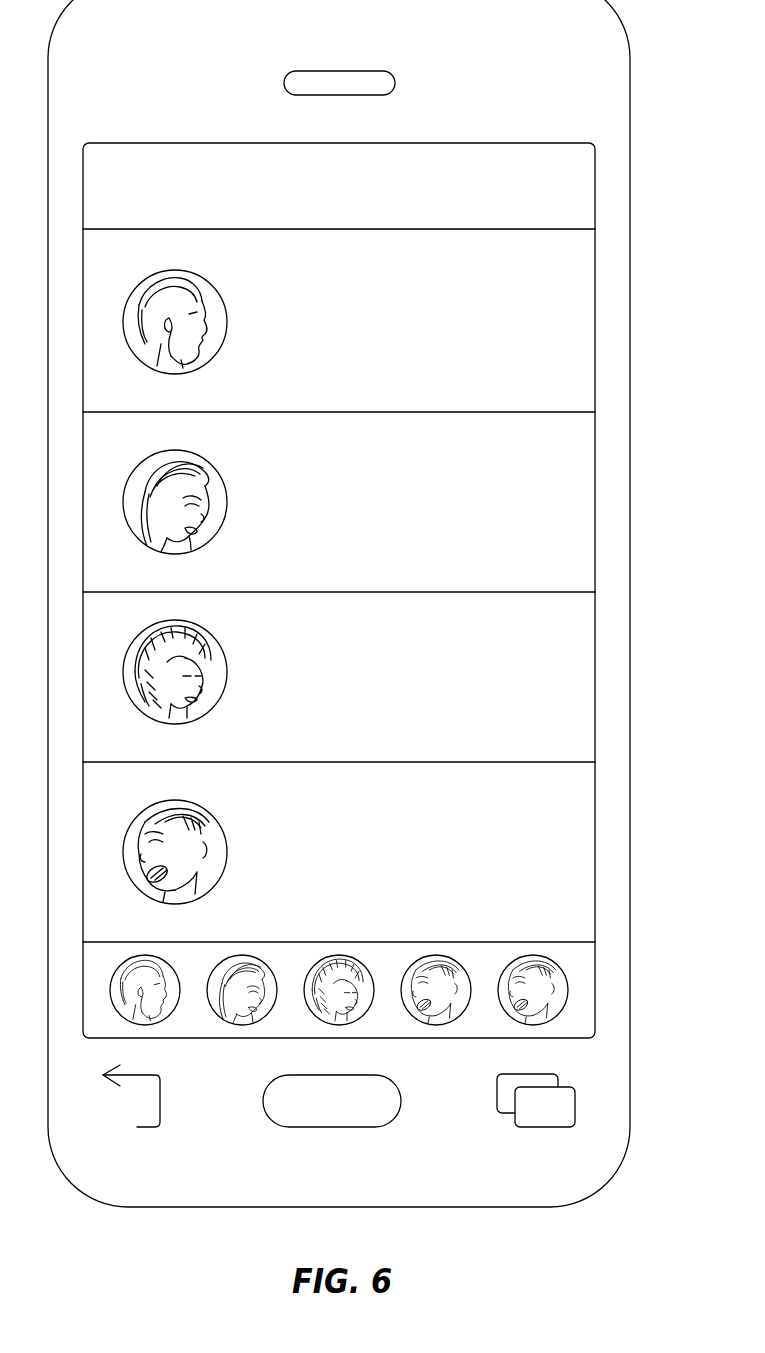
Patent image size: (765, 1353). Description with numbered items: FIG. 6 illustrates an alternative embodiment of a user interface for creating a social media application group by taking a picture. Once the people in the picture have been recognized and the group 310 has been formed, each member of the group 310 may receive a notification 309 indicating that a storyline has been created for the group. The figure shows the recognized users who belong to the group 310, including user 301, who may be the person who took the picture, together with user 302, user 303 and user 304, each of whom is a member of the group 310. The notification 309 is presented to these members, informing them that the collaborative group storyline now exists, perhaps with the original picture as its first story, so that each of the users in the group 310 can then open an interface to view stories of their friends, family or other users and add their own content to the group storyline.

The user 301 is at (211, 284).
The user 302 is at (211, 464).
The user 303 is at (208, 808).
The user 304 is at (218, 640).
The notification 309 is at (578, 175).
The group 310 is at (645, 942).